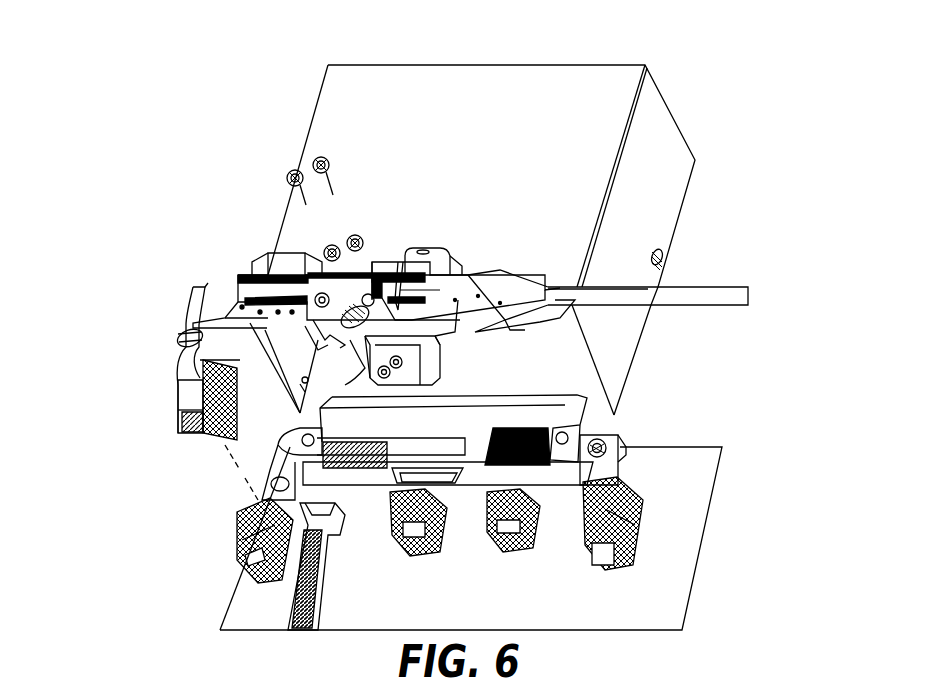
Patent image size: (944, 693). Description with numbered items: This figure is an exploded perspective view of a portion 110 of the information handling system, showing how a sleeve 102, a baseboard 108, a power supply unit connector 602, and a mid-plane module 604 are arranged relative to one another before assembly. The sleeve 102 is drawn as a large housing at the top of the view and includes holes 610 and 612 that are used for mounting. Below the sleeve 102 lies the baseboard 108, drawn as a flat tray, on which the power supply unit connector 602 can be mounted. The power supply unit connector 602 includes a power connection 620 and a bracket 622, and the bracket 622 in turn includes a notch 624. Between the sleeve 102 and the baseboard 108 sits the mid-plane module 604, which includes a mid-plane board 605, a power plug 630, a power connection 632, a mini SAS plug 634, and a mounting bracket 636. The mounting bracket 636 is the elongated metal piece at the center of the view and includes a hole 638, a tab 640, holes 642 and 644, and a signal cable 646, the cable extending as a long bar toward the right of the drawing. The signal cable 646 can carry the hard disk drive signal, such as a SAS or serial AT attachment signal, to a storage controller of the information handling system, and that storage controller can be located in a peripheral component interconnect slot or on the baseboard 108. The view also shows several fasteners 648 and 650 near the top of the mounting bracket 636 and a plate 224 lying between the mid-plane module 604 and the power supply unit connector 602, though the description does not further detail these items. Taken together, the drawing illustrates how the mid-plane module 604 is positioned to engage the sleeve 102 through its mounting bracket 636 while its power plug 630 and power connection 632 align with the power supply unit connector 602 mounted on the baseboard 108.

The sleeve 102 is at (347, 88).
The baseboard 108 is at (698, 505).
The portion of the information handling system 110 is at (738, 158).
The mounting plate 224 is at (587, 396).
The power supply unit connector 602 is at (627, 448).
The mid-plane module 604 is at (172, 322).
The mid-plane board 605 is at (223, 300).
The hole 610 is at (445, 360).
The hole 612 is at (336, 368).
The power connection 620 is at (256, 525).
The bracket 622 is at (448, 480).
The notch 624 is at (377, 470).
The power plug 630 is at (182, 400).
The power connection 632 is at (258, 272).
The mini SAS plug 634 is at (455, 244).
The mounting bracket 636 is at (392, 262).
The hole 638 is at (238, 281).
The tab 640 is at (497, 335).
The hole 642 is at (350, 238).
The hole 644 is at (328, 250).
The signal cable 646 is at (735, 288).
The screw 648 is at (321, 160).
The screw 650 is at (295, 170).